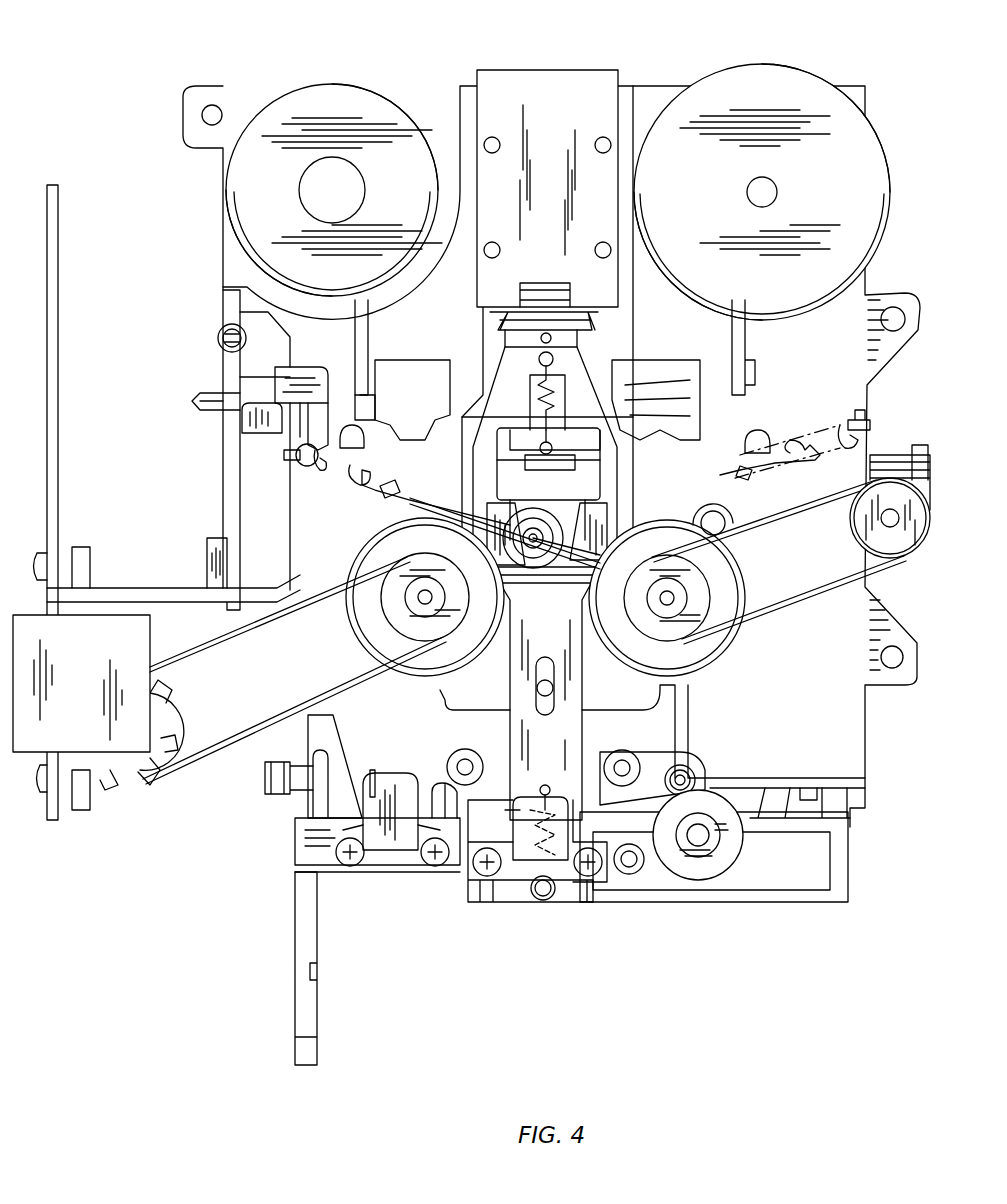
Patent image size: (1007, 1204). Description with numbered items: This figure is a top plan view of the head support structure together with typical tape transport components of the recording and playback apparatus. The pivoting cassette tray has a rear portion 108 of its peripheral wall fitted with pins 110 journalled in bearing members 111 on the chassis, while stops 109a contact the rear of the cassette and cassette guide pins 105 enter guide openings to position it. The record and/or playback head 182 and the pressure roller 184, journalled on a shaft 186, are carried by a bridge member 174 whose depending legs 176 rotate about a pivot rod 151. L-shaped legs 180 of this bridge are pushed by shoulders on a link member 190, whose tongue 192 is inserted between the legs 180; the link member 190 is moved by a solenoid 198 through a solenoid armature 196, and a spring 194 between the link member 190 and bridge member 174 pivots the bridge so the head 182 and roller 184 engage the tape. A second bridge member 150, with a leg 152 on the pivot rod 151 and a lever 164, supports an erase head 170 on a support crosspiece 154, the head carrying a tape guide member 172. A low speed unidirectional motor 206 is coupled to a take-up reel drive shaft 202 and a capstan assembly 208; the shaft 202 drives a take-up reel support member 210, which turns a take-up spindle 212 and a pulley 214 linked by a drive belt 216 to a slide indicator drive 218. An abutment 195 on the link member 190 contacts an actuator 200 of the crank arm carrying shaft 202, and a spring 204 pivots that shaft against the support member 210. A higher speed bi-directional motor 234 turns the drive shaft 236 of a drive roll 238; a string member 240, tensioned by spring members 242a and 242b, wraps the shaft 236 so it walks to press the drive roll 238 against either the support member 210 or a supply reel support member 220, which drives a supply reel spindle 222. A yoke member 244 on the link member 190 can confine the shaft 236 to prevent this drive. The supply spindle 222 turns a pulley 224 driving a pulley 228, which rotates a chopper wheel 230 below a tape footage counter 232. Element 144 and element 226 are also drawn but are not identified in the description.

The cassette guide pins 105 is at (465, 767).
The rear portion 108 is at (420, 360).
The stops 109a is at (355, 440).
The pins 110 is at (350, 368).
The bearing members 111 is at (368, 335).
The brake actuator bracket 144 is at (320, 410).
The bridge member 150 is at (352, 884).
The pivot rod 151 is at (265, 775).
The leg 152 is at (318, 803).
The support crosspiece 154 is at (385, 872).
The lever 164 is at (315, 950).
The erase head 170 is at (395, 773).
The tape guide member 172 is at (372, 770).
The bridge member 174 is at (666, 918).
The depending legs 176 is at (860, 803).
The L-shaped legs 180 is at (530, 795).
The record and/or playback head 182 is at (530, 870).
The pressure roller 184 is at (705, 870).
The shaft 186 is at (705, 845).
The link member 190 is at (590, 745).
The tongue 192 is at (495, 804).
The spring 194 is at (548, 892).
The abutment 195 is at (520, 430).
The solenoid armature 196 is at (590, 335).
The solenoid 198 is at (530, 85).
The actuator 200 is at (575, 455).
The take-up reel drive shaft 202 is at (720, 523).
The spring 204 is at (560, 395).
The low speed unidirectional motor 206 is at (725, 95).
The capstan assembly 208 is at (690, 775).
The take-up reel support member 210 is at (740, 560).
The take-up spindle 212 is at (680, 598).
The pulley 214 is at (633, 630).
The drive belt 216 is at (775, 610).
The slide indicator drive 218 is at (926, 563).
The supply reel support member 220 is at (370, 540).
The supply reel spindle 222 is at (435, 625).
The pulley 224 is at (380, 620).
The drive belt 226 is at (250, 630).
The pulley 228 is at (150, 795).
The chopper wheel 230 is at (128, 790).
The tape footage counter 232 is at (40, 752).
The higher speed bi-directional motor 234 is at (318, 100).
The drive shaft 236 is at (533, 540).
The drive roll 238 is at (560, 490).
The string member 240 is at (432, 490).
The spring member 242a is at (360, 470).
The spring member 242b is at (795, 447).
The yoke member 244 is at (620, 552).